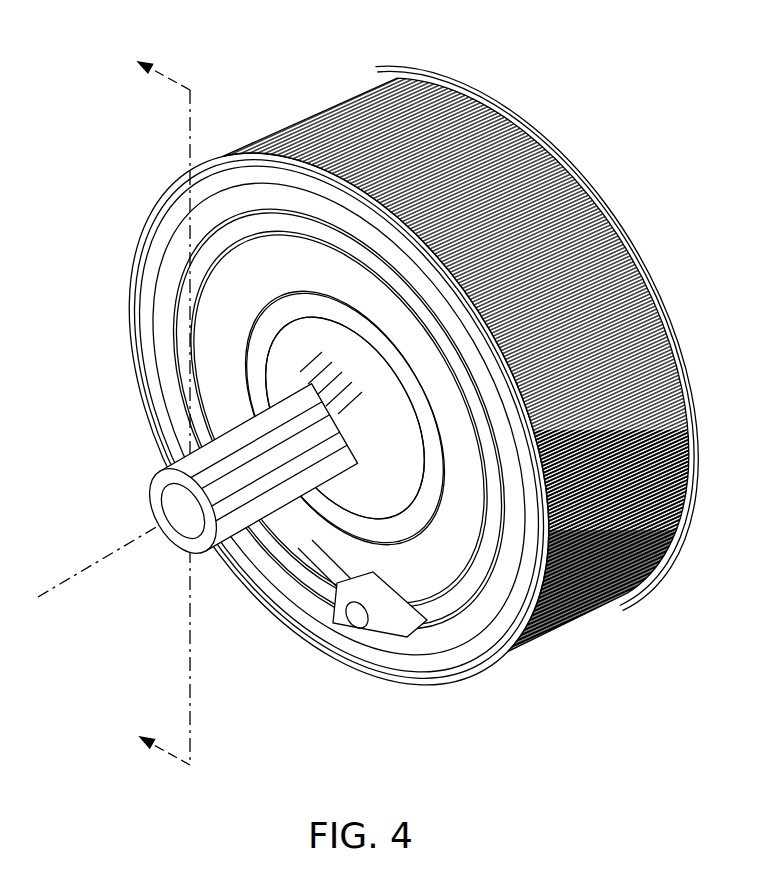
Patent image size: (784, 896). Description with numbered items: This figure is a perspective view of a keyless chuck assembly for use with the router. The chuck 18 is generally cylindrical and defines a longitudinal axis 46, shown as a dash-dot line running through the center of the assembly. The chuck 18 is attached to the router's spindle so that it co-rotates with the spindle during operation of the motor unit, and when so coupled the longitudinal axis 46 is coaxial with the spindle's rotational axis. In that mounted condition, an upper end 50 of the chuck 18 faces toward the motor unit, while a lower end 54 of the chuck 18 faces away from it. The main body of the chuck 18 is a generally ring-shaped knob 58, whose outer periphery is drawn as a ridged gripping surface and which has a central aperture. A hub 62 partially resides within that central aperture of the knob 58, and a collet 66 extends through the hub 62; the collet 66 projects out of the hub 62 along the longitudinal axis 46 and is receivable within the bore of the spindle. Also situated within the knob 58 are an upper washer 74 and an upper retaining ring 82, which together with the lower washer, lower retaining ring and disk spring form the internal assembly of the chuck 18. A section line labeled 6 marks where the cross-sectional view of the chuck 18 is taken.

The section line 6- 6 is at (153, 405).
The chuck 18 is at (608, 88).
The longitudinal axis 46 is at (68, 575).
The upper end 50 is at (460, 665).
The lower end 54 is at (662, 313).
The knob 58 is at (307, 117).
The hub 62 is at (305, 330).
The collet 66 is at (150, 472).
The upper washer 74 is at (453, 577).
The upper retaining ring 82 is at (387, 628).